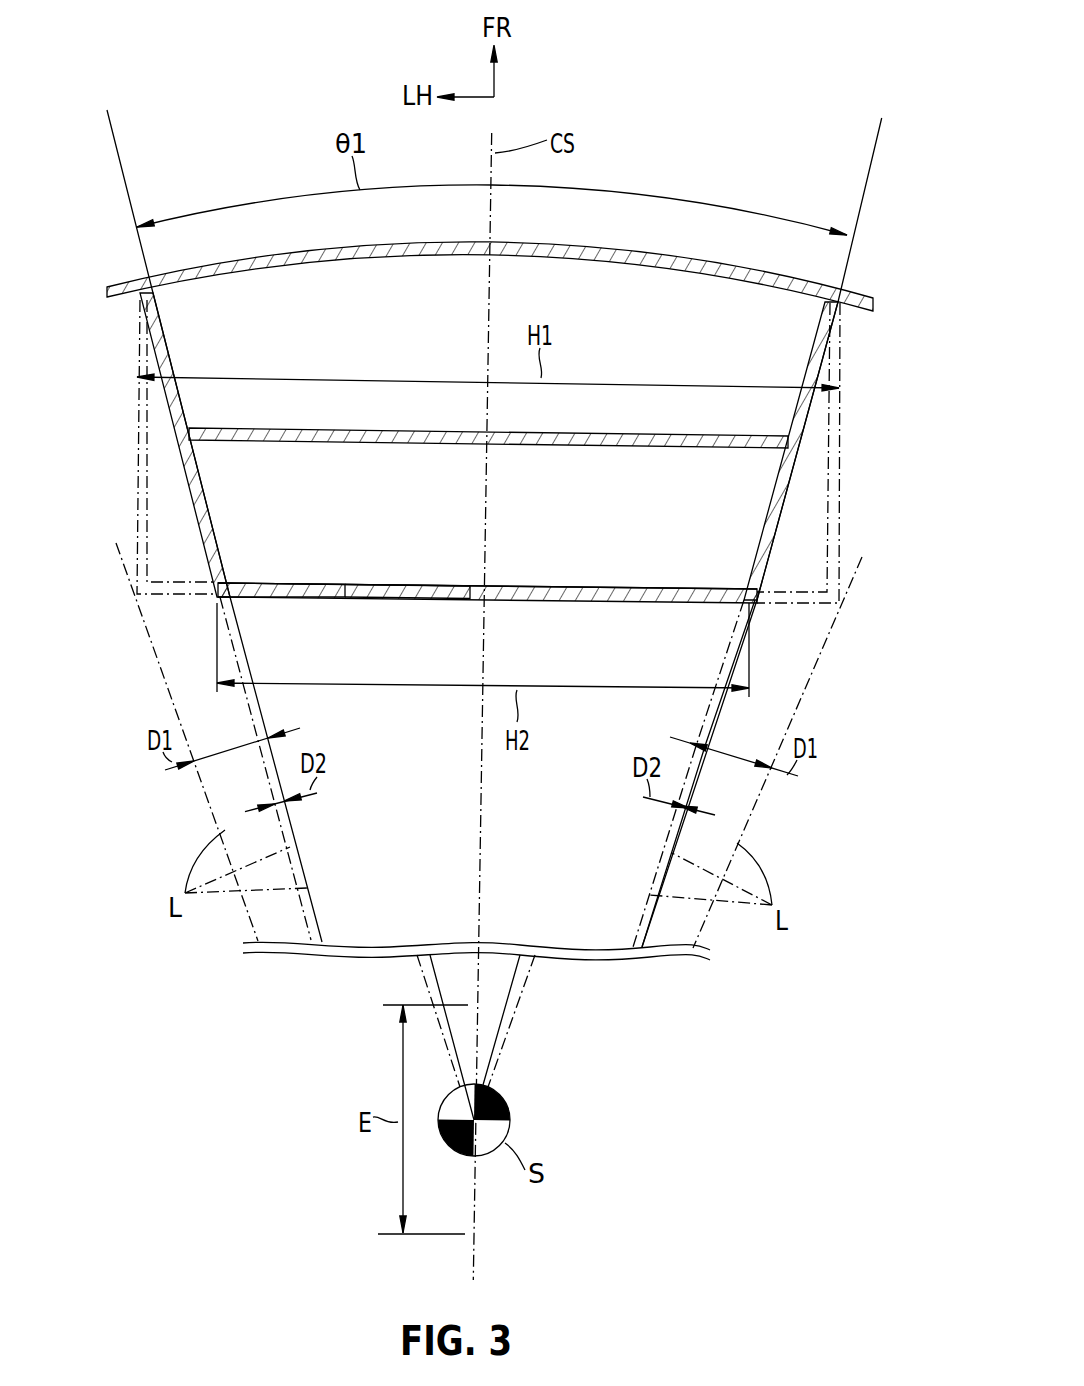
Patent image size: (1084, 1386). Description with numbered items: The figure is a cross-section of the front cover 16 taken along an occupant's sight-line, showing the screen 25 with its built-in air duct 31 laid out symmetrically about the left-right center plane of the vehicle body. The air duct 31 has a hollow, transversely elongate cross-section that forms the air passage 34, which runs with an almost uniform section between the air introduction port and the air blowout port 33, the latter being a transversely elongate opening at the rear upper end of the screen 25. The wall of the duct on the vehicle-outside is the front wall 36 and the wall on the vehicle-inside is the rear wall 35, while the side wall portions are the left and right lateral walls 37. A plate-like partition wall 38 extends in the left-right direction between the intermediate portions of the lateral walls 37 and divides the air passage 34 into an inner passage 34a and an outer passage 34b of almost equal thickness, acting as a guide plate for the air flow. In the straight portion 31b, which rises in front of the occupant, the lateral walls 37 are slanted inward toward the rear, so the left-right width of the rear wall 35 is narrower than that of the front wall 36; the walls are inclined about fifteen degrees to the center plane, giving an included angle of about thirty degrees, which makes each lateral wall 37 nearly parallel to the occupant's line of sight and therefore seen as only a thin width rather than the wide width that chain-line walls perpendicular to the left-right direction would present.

The screen 25 is at (494, 473).
The front cover 16 is at (494, 528).
The front wall 36 is at (622, 248).
The air duct 31 is at (545, 620).
The straight portion 31b is at (792, 482).
The left and right lateral walls 37 is at (173, 412).
The partition wall 38 is at (622, 445).
The air blowout port 33 is at (563, 567).
The rear wall 35 is at (633, 593).
The air passage 34 is at (344, 539).
The inner passage 34a is at (433, 525).
The outer passage 34b is at (345, 397).